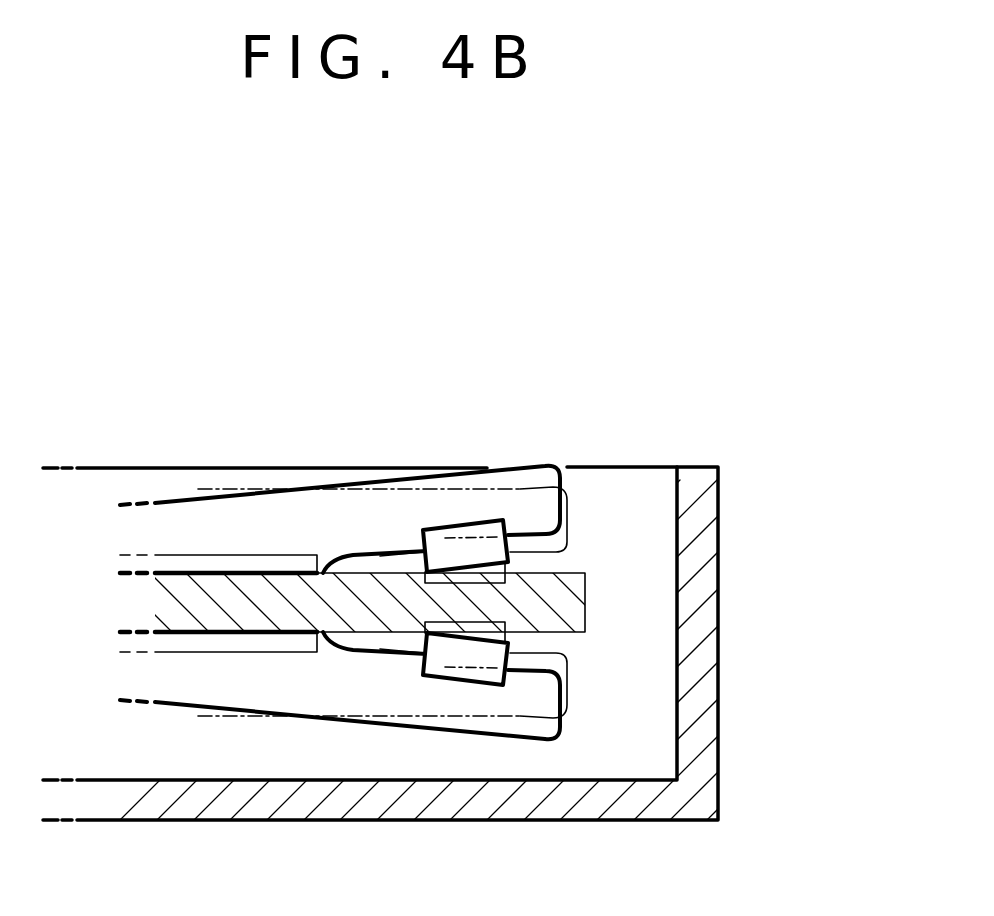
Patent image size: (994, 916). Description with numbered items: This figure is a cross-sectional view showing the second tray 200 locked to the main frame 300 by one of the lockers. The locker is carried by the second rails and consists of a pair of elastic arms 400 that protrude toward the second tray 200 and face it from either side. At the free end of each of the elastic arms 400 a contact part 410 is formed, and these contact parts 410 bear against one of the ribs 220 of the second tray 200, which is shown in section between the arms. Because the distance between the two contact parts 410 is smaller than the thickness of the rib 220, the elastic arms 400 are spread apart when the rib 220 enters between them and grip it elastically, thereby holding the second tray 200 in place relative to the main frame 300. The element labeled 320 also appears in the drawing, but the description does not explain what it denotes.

The second tray 200 is at (598, 548).
The rib 220 is at (570, 600).
The main frame 300 is at (742, 468).
The insulating layer / lead 320 is at (237, 557).
The elastic arms 400 is at (560, 470).
The contact parts 410 is at (467, 532).